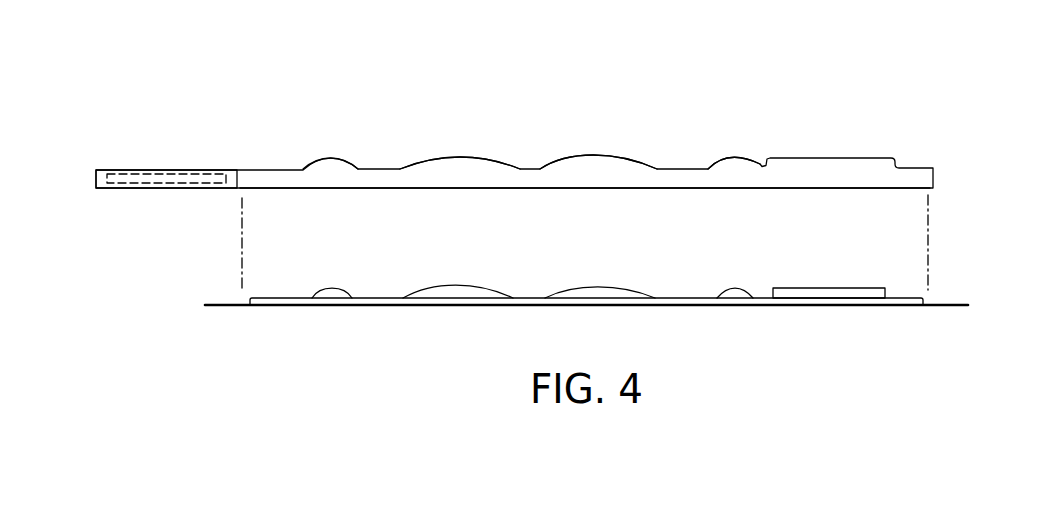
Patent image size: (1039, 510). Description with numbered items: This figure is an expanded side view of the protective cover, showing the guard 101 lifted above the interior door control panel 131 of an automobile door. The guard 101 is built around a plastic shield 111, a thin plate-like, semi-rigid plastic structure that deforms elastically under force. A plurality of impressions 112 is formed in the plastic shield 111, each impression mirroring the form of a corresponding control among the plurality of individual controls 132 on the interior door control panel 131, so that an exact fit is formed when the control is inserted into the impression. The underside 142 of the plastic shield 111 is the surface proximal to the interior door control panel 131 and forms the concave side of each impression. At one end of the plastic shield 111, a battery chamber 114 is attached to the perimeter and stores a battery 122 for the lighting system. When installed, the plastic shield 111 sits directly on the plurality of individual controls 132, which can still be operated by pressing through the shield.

The guard 101 is at (558, 128).
The plastic shield 111 is at (858, 178).
The plurality of impressions 112 is at (447, 158).
The battery chamber 114 is at (100, 175).
The battery 122 is at (157, 173).
The interior door control panel 131 is at (885, 288).
The plurality of individual controls 132 is at (325, 290).
The underside 142 is at (340, 197).